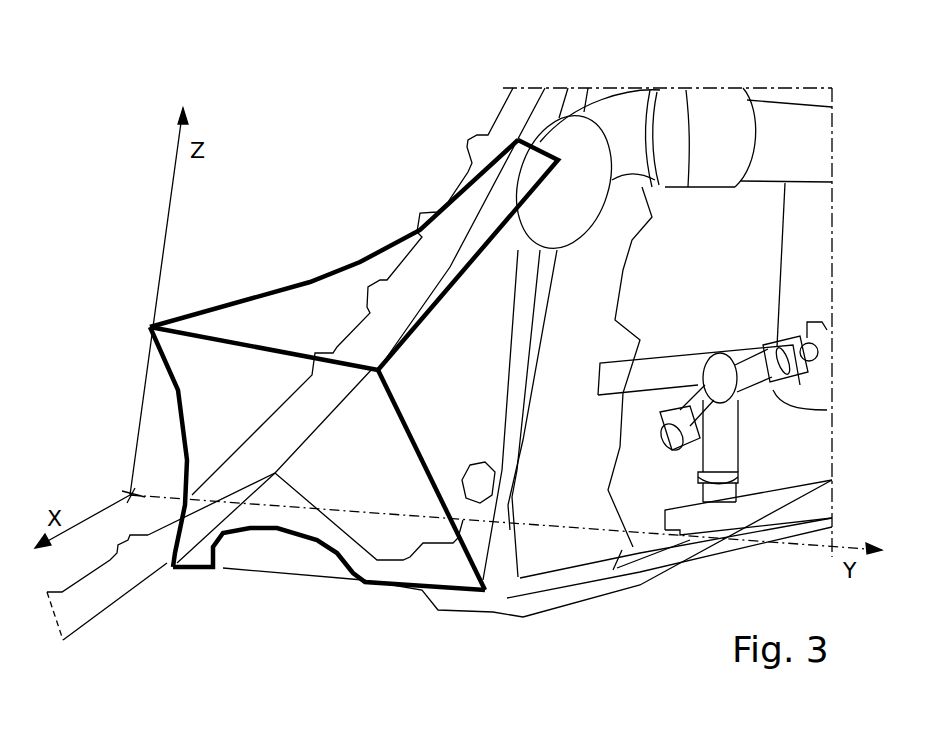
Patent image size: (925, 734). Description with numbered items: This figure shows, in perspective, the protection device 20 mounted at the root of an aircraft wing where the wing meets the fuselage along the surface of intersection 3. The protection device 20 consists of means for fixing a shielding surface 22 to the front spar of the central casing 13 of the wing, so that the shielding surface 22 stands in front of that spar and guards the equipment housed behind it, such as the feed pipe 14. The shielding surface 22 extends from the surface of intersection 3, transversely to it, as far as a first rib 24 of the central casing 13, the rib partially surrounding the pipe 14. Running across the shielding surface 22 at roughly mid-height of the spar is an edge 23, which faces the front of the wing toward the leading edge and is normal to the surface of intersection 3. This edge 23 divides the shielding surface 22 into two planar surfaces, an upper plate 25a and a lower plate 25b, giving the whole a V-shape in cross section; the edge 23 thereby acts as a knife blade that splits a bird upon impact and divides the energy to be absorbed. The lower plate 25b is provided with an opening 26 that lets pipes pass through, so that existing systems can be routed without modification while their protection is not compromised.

The surface of intersection 3 is at (113, 636).
The central casing 13 is at (658, 573).
The feed pipe 14 is at (623, 127).
The protection device 20 is at (310, 354).
The shielding surface 22 is at (160, 407).
The edge 23 is at (202, 325).
The first rib 24 is at (502, 563).
The upper plate 25a is at (245, 325).
The lower plate 25b is at (203, 467).
The opening 26 is at (280, 595).